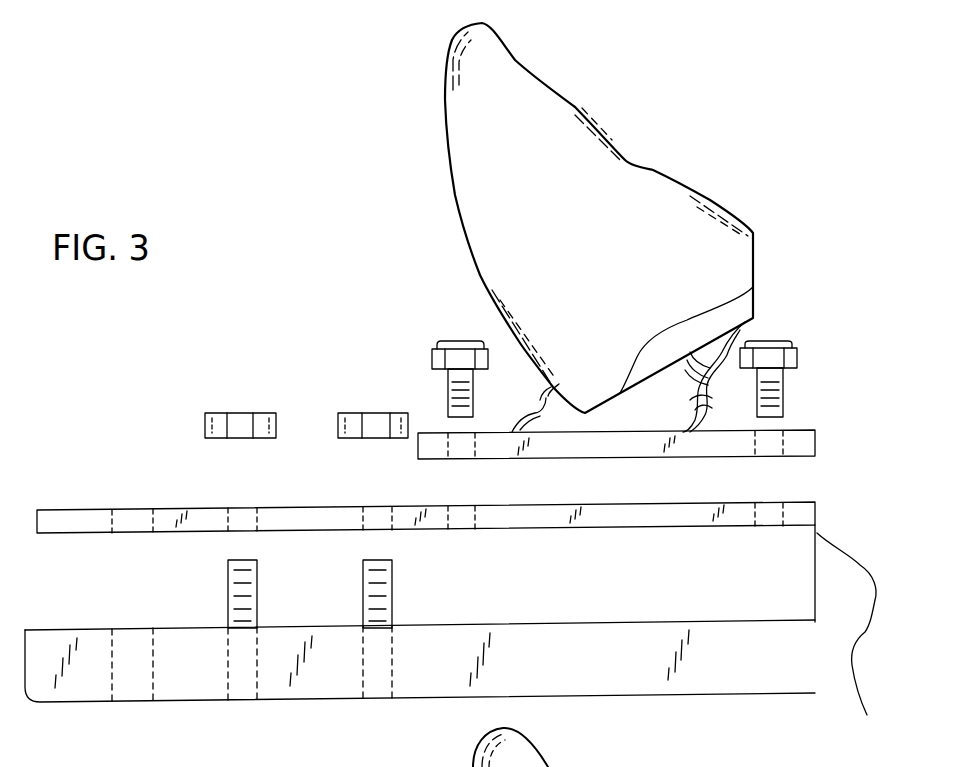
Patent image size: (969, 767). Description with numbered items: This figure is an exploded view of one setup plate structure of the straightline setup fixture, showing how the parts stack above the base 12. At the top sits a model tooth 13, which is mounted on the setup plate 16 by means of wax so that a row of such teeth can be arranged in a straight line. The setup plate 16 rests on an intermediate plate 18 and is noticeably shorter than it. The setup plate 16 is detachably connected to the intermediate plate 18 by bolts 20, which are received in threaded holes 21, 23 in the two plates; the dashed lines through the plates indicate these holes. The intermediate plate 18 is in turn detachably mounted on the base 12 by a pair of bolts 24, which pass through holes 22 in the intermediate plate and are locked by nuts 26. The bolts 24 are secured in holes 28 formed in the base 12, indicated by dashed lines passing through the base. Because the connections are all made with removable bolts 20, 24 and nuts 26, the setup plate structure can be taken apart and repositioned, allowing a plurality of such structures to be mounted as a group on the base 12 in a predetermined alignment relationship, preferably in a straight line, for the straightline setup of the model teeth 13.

The base 12 is at (567, 675).
The model tooth 13 is at (572, 147).
The setup plate 16 is at (572, 450).
The intermediate plate 18 is at (641, 514).
The bolt 20 is at (447, 341).
The threaded hole 21 is at (460, 458).
The hole 22 is at (376, 506).
The threaded hole 23 is at (460, 522).
The bolt 24 is at (363, 587).
The nut 26 is at (343, 413).
The hole 28 is at (373, 697).